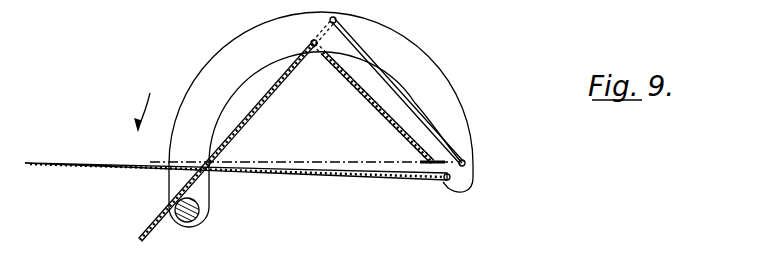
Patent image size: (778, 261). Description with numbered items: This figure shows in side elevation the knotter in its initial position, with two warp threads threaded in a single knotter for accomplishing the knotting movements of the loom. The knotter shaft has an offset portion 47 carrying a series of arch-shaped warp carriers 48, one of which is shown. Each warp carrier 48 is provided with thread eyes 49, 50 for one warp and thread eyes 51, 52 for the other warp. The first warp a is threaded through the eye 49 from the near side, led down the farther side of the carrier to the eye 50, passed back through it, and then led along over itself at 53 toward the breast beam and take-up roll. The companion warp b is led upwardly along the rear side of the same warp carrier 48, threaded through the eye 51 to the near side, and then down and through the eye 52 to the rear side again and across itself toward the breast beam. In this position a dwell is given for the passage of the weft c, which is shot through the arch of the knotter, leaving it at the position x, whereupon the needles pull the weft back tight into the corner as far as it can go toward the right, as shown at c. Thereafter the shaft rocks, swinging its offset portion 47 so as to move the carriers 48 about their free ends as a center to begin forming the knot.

The offset portion 47 is at (196, 221).
The warp carrier 48 is at (442, 72).
The thread eye 49 is at (311, 41).
The thread eye 50 is at (448, 183).
The thread eye 51 is at (338, 19).
The thread eye 52 is at (466, 163).
The warp crossing point 53 is at (201, 174).
The warp a is at (113, 168).
The warp b is at (113, 168).
The weft c is at (438, 158).
The weft position x is at (386, 150).